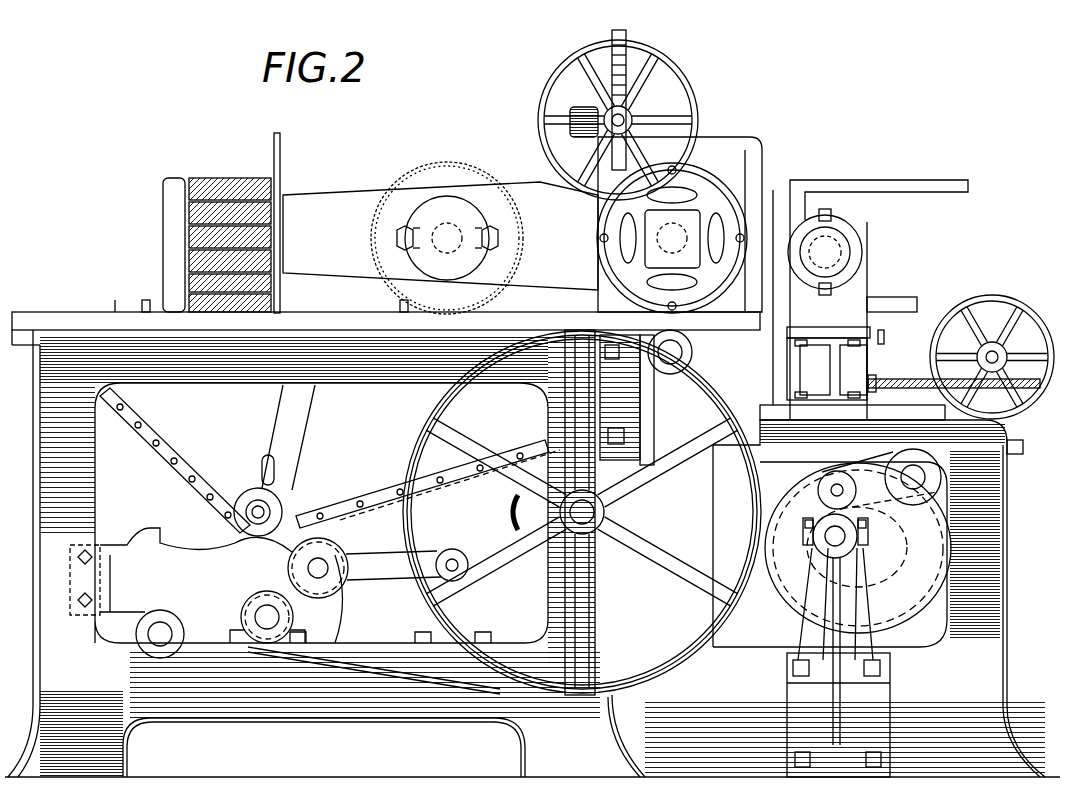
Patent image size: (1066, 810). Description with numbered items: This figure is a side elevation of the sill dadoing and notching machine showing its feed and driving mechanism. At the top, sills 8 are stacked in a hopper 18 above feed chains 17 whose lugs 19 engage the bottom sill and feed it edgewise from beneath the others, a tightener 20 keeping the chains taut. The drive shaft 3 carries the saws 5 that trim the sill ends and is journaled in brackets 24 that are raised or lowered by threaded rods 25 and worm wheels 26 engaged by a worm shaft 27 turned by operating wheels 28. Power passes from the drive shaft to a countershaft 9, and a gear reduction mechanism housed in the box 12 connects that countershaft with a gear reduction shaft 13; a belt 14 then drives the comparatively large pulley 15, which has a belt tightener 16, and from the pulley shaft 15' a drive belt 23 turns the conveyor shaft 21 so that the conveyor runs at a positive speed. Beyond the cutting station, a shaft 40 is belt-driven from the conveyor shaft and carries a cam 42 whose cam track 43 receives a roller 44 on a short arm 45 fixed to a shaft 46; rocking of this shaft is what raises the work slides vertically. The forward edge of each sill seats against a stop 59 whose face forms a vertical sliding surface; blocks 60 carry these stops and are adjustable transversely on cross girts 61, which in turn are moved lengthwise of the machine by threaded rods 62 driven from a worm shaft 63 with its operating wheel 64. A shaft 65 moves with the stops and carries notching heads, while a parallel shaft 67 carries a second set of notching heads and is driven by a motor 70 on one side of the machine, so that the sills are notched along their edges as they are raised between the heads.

The drive shaft 3 is at (447, 232).
The saws 5 is at (408, 183).
The sill 8 is at (216, 180).
The shaft 9 is at (160, 645).
The box 12 is at (175, 540).
The gear reduction shaft 13 is at (266, 625).
The belt 14 is at (430, 672).
The pulley 15 is at (582, 547).
The shaft 15' is at (536, 512).
The belt tightener 16 is at (116, 300).
The feed chains 17 is at (145, 433).
The hopper 18 is at (173, 180).
The lugs 19 is at (145, 300).
The tightener 20 is at (282, 490).
The conveyor shaft 21 is at (672, 366).
The drive belt 23 is at (512, 505).
The brackets 24 is at (540, 180).
The threaded rods 25 is at (610, 33).
The worm wheels 26 is at (570, 118).
The worm shaft 27 is at (620, 118).
The operating wheels 28 is at (698, 60).
The shaft 40 is at (842, 540).
The cam 42 is at (958, 548).
The cam track 43 is at (905, 605).
The roller 44 is at (820, 497).
The short arm 45 is at (872, 460).
The shaft 46 is at (916, 478).
The stop 59 is at (790, 180).
The blocks 60 is at (882, 312).
The cross girts 61 is at (842, 330).
The threaded rods 62 is at (890, 380).
The worm shaft 63 is at (997, 352).
The operating wheel 64 is at (1008, 302).
The shaft 65 is at (842, 248).
The shaft 67 is at (665, 242).
The motor 70 is at (612, 213).